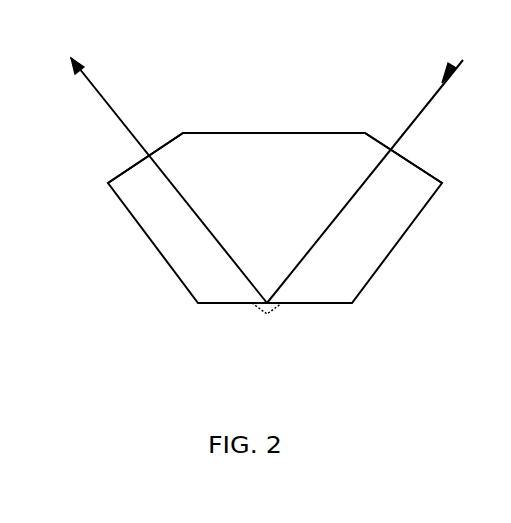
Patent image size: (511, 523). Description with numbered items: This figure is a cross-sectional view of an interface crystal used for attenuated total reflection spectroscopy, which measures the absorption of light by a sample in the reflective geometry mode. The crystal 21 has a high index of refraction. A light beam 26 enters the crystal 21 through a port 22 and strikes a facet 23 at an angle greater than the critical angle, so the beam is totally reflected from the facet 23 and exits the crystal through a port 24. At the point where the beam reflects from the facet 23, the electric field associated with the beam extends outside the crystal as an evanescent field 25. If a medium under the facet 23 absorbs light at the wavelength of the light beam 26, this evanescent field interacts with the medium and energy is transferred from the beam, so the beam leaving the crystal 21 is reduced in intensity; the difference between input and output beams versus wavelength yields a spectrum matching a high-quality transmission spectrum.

The crystal 21 is at (402, 242).
The port 22 is at (412, 162).
The facet 23 is at (313, 303).
The port 24 is at (155, 150).
The evanescent field 25 is at (267, 314).
The light beam 26 is at (420, 112).